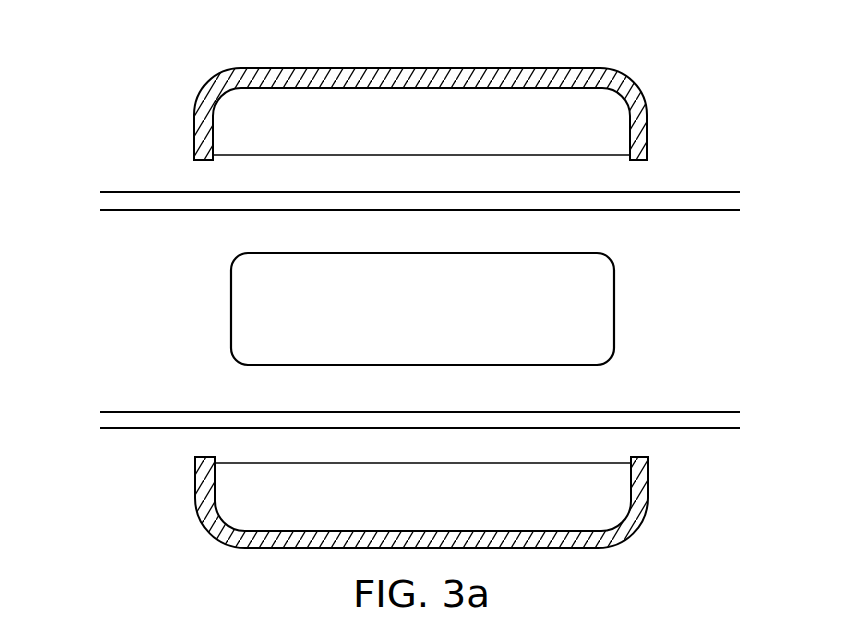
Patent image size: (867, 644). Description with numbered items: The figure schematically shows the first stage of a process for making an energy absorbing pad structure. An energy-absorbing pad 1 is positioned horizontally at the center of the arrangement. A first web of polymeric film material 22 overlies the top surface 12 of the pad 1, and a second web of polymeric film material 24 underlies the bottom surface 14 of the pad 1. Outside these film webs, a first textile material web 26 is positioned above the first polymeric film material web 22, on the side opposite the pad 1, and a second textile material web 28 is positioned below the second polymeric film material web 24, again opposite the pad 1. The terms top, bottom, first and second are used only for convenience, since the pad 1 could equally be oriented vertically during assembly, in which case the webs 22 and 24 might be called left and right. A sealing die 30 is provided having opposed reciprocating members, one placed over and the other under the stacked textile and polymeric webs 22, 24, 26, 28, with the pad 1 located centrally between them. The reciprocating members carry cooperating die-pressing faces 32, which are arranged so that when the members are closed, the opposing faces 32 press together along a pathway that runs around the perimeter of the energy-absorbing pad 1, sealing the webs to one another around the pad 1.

The energy-absorbing pad 1 is at (559, 326).
The top surface 12 is at (578, 252).
The bottom surface 14 is at (578, 366).
The first web of polymeric film material 22 is at (125, 212).
The second web of polymeric film material 24 is at (126, 411).
The first textile material web 26 is at (120, 191).
The second textile material web 28 is at (122, 430).
The sealing die 30 is at (545, 73).
The die-pressing faces 32 is at (641, 160).